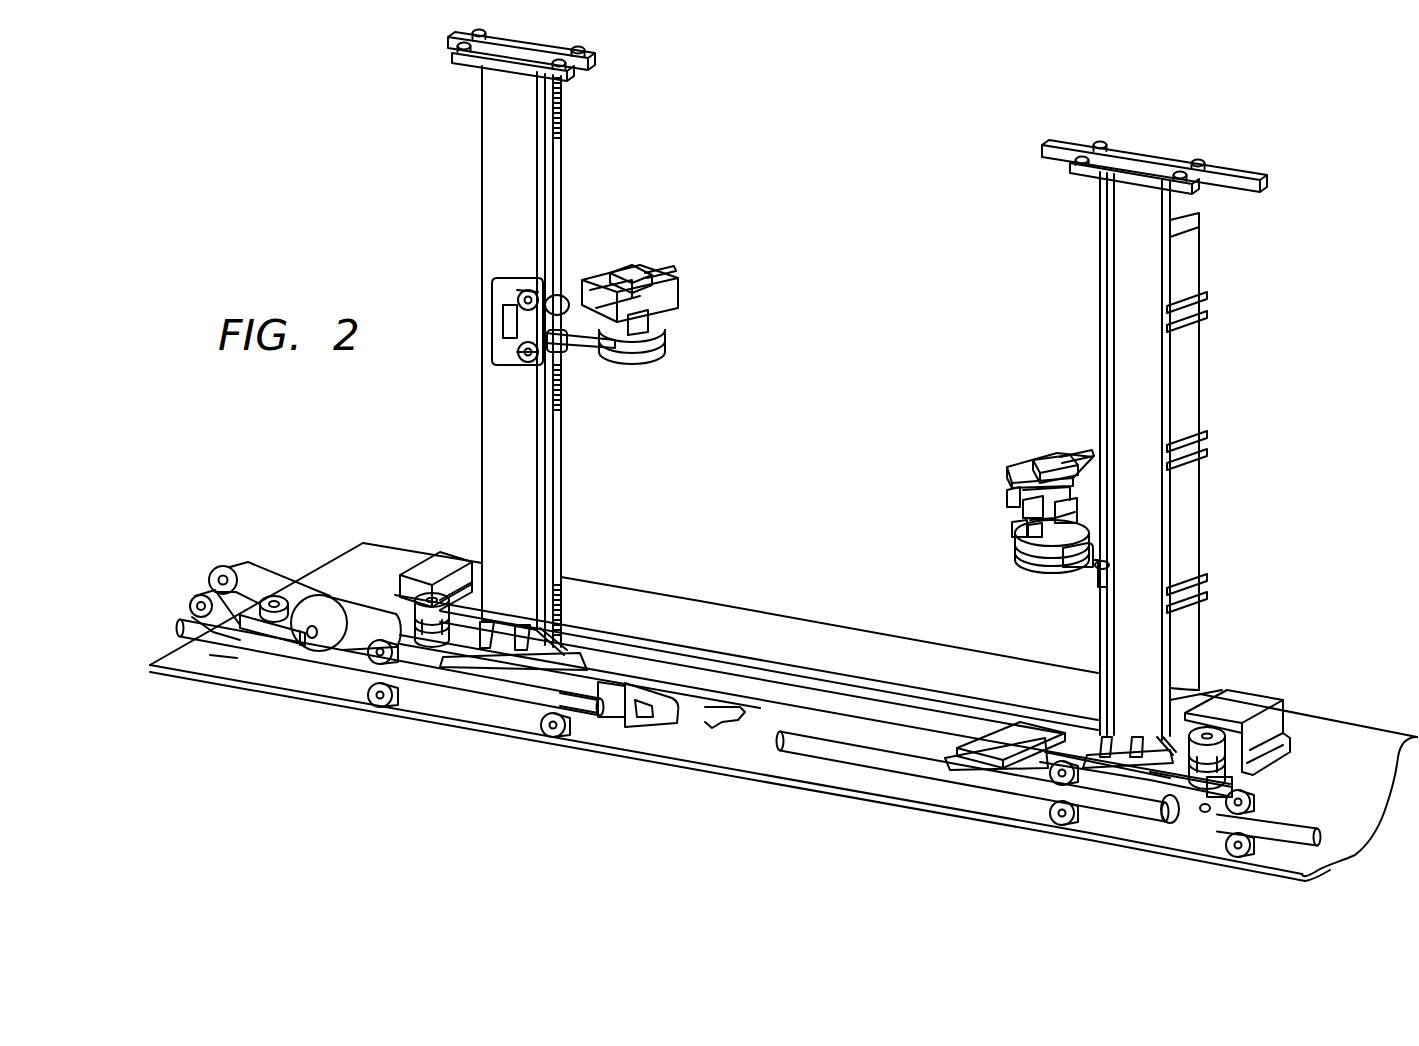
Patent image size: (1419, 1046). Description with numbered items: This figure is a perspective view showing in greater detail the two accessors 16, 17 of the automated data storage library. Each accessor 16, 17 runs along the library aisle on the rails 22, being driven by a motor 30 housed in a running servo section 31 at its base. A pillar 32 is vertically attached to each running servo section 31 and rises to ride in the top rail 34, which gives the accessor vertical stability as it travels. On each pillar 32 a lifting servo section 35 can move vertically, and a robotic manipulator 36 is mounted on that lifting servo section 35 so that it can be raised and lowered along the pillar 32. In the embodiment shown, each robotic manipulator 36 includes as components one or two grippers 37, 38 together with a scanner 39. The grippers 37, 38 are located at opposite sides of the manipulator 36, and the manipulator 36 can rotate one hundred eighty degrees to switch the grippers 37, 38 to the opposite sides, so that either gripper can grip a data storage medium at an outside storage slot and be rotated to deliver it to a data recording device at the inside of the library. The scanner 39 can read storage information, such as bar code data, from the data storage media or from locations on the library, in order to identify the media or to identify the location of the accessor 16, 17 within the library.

The accessor 16 is at (433, 235).
The accessor 17 is at (1248, 336).
The rails 22 is at (765, 705).
The motor 30 is at (425, 640).
The running servo section 31 is at (457, 552).
The pillar 32 is at (485, 425).
The top rail 34 is at (1050, 143).
The lifting servo section 35 is at (585, 352).
The robotic manipulator 36 is at (665, 332).
The gripper 37 is at (596, 282).
The gripper 38 is at (668, 266).
The scanner 39 is at (626, 270).